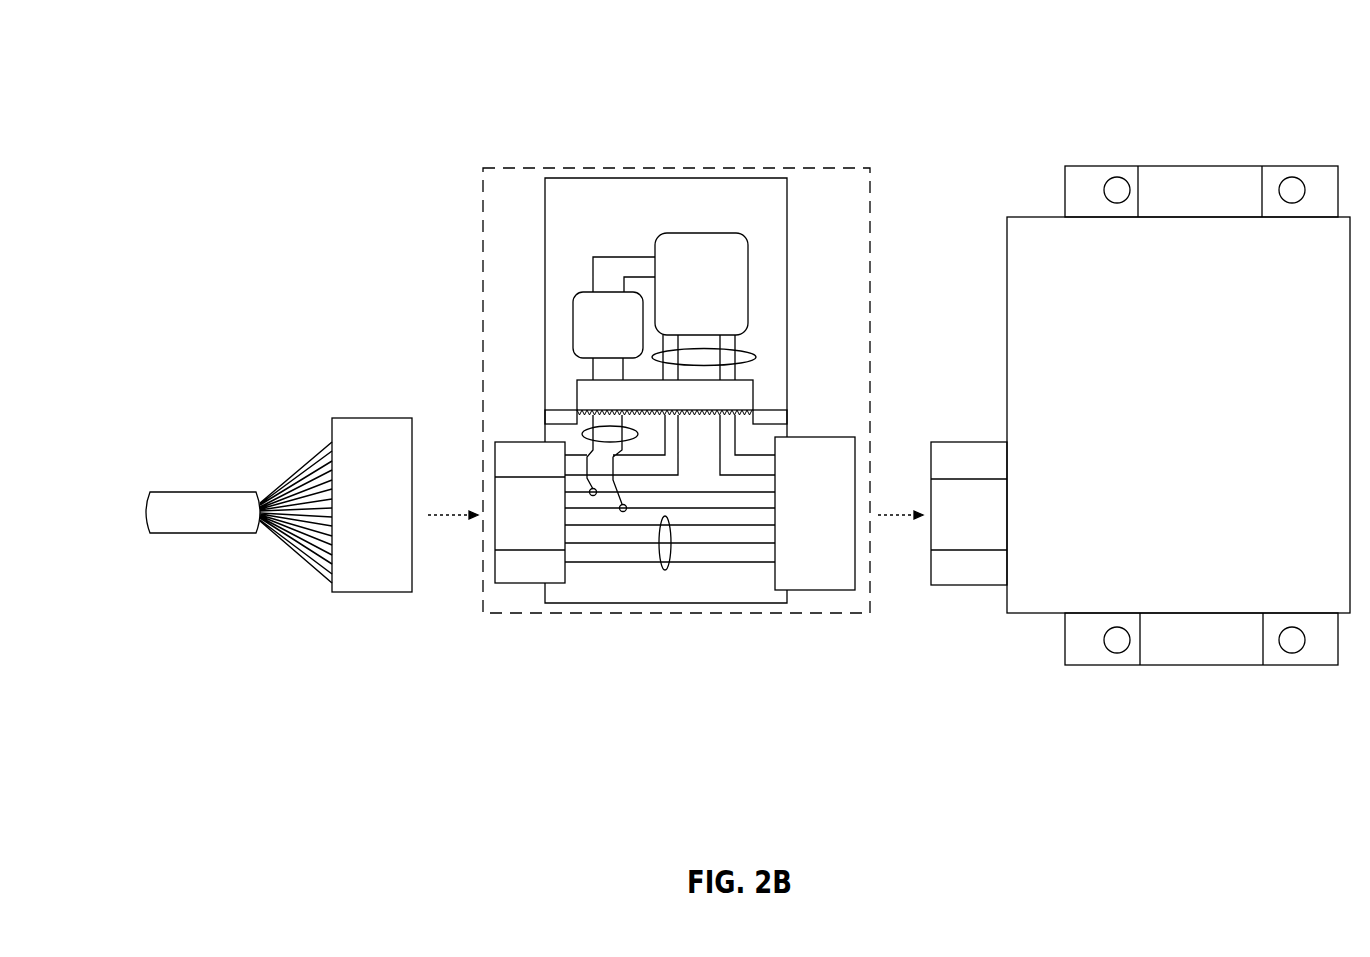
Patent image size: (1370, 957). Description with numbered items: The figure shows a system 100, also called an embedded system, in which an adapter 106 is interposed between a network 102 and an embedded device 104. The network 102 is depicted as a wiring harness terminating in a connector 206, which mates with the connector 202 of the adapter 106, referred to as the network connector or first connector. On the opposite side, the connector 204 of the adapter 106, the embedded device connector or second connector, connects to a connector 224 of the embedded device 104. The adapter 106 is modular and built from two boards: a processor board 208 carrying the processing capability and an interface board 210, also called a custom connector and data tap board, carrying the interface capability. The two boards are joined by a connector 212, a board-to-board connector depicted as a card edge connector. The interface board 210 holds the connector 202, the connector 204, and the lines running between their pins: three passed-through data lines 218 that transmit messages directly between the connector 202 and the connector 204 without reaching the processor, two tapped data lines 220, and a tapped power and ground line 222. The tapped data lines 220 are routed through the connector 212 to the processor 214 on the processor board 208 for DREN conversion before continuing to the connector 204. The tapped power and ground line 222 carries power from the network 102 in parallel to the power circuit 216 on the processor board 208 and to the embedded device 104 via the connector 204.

The system 100 is at (137, 58).
The network 102 is at (236, 534).
The embedded device 104 is at (1187, 166).
The adapter 106 is at (712, 167).
The connector 202 is at (520, 585).
The connector 204 is at (832, 591).
The connector 206 is at (378, 593).
The processor board 208 is at (573, 177).
The interface board 210 is at (757, 604).
The connector 212 is at (757, 400).
The processor 214 is at (712, 232).
The power circuit 216 is at (573, 315).
The passed-through data lines 218 is at (665, 572).
The tapped data lines 220 is at (757, 357).
The tapped power and ground line 222 is at (583, 433).
The connector 224 is at (953, 586).